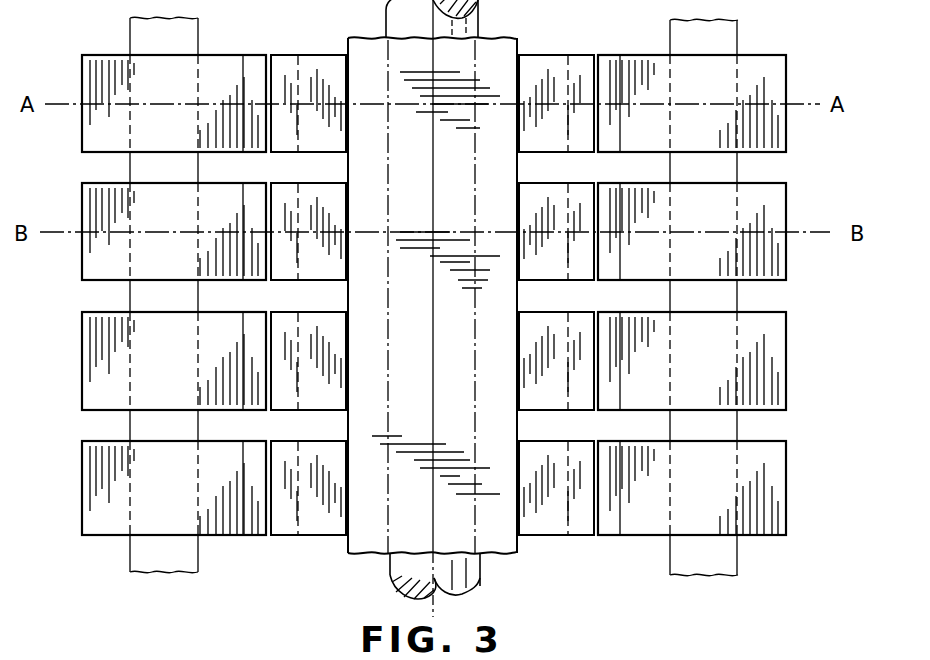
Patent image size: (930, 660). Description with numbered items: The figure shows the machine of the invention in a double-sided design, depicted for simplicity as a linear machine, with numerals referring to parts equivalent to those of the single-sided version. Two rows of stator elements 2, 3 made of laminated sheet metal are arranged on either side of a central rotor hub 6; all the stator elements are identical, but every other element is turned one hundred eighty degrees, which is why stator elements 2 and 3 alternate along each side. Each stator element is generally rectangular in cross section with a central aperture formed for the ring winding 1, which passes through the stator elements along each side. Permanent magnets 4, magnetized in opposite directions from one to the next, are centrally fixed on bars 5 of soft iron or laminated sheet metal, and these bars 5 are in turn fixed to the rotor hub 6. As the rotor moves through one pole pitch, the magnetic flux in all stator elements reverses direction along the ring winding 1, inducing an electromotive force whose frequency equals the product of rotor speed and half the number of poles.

The ring winding 1 is at (144, 556).
The stator element 2 is at (84, 255).
The stator element 3 is at (90, 70).
The permanent magnet 4 is at (283, 60).
The bar 5 is at (322, 60).
The rotor hub 6 is at (372, 48).